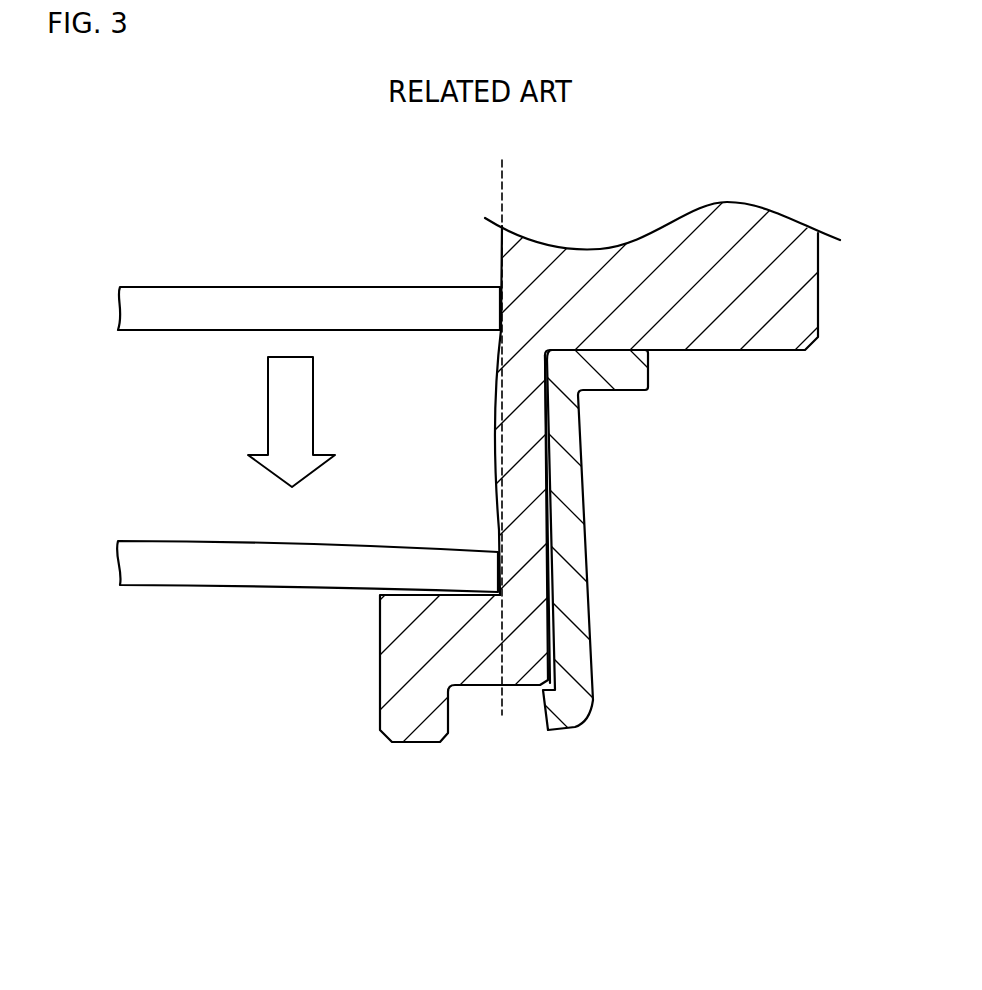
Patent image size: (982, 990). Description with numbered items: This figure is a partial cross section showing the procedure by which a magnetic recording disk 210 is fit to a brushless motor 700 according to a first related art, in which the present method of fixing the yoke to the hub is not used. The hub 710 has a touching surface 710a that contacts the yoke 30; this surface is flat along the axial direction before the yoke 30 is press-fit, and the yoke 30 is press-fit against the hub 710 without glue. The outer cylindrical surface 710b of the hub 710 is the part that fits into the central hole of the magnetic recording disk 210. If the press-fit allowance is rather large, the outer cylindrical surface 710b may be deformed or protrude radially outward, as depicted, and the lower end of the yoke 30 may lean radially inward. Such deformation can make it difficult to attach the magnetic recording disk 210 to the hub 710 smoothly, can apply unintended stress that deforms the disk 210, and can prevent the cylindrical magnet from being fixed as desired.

The brushless motor 700 is at (607, 927).
The hub 710 is at (738, 215).
The touching surface 710a is at (547, 645).
The outer cylindrical surface 710b is at (500, 250).
The yoke 30 is at (575, 708).
The magnetic recording disk 210 is at (155, 304).